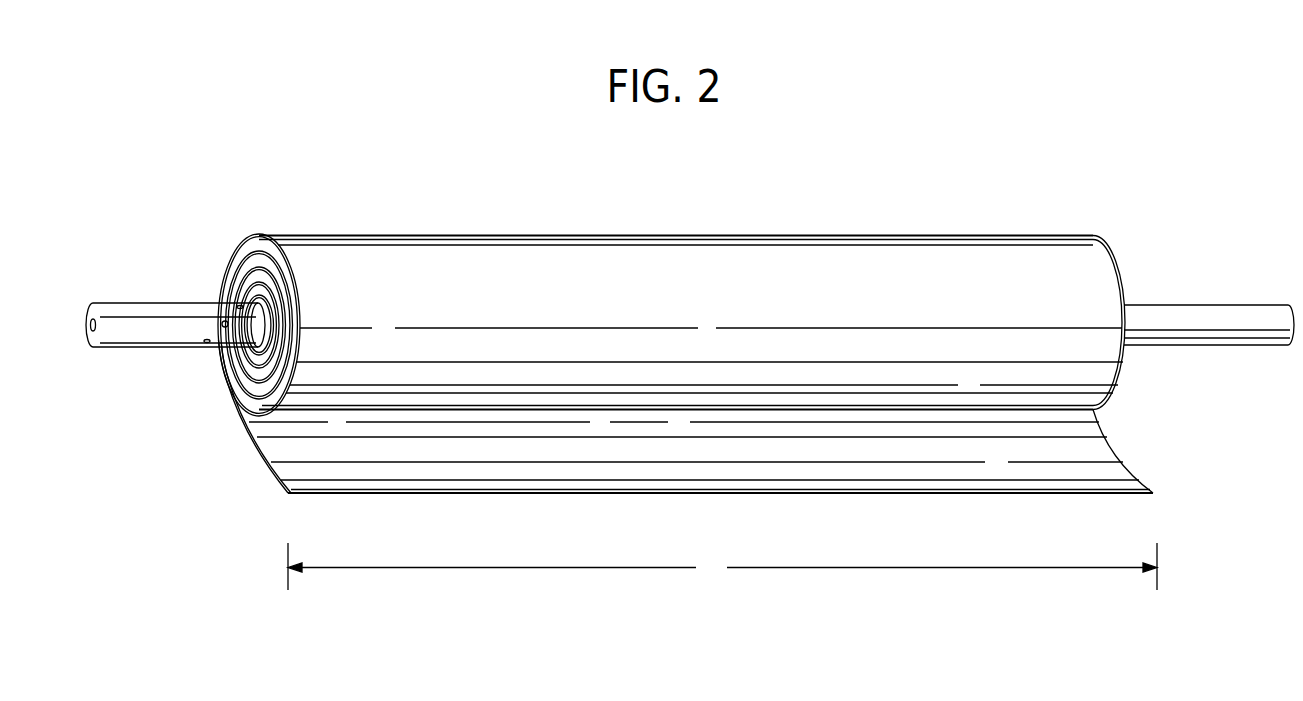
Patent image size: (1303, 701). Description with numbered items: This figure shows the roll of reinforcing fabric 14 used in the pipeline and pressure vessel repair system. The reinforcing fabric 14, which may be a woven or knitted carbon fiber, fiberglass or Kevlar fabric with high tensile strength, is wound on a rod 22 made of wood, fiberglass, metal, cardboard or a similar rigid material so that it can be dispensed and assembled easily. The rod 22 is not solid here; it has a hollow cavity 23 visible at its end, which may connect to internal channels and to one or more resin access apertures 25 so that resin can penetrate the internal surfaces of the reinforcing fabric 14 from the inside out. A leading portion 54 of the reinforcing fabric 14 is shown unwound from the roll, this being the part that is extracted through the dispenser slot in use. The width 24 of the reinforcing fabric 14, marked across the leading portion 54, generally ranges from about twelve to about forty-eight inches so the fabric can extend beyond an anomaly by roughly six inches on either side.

The reinforcing fabric 14 is at (839, 263).
The rod 22 is at (152, 312).
The hollow cavity 23 is at (89, 328).
The resin access aperture 25 is at (222, 324).
The leading portion 54 is at (904, 485).
The width 24 is at (700, 600).